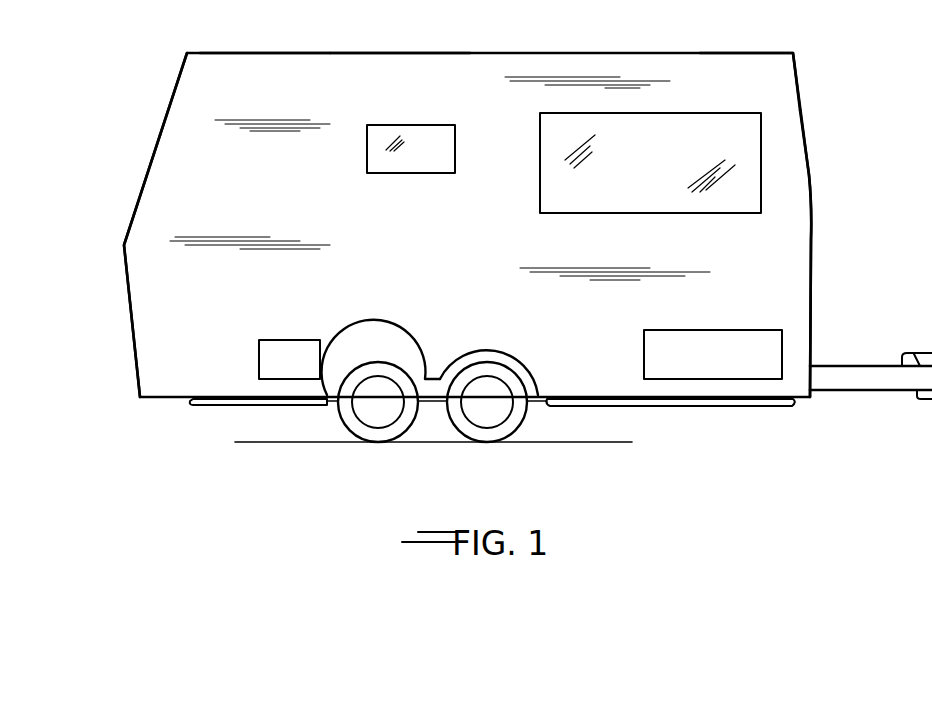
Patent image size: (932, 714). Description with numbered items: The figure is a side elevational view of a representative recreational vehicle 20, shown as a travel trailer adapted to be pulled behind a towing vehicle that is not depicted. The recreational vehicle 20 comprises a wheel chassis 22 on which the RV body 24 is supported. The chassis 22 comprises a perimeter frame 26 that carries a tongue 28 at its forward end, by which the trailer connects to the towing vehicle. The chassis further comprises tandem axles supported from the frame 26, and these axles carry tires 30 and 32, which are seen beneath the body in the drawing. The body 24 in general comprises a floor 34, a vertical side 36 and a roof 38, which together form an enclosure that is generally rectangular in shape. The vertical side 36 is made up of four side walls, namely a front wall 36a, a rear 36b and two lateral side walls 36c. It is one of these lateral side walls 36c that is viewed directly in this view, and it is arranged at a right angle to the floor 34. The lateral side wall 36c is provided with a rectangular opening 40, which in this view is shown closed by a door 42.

The recreational vehicle 20 is at (497, 53).
The wheel chassis 22 is at (189, 403).
The RV body 24 is at (219, 75).
The perimeter frame 26 is at (696, 406).
The tongue 28 is at (841, 366).
The tire 30 is at (522, 424).
The tire 32 is at (342, 422).
The floor 34 is at (600, 397).
The vertical side 36 is at (176, 79).
The front wall 36a is at (809, 176).
The rear 36b is at (166, 116).
The lateral side wall 36c is at (340, 76).
The roof 38 is at (741, 53).
The rectangular opening 40 is at (319, 350).
The door 42 is at (273, 353).